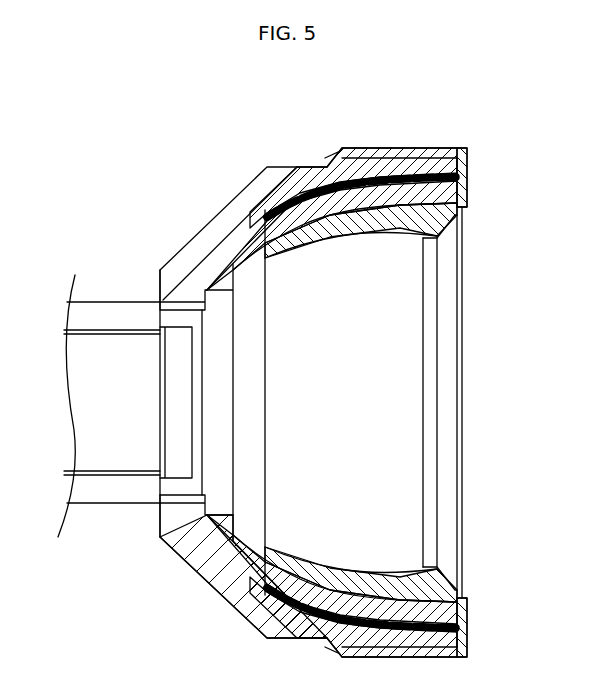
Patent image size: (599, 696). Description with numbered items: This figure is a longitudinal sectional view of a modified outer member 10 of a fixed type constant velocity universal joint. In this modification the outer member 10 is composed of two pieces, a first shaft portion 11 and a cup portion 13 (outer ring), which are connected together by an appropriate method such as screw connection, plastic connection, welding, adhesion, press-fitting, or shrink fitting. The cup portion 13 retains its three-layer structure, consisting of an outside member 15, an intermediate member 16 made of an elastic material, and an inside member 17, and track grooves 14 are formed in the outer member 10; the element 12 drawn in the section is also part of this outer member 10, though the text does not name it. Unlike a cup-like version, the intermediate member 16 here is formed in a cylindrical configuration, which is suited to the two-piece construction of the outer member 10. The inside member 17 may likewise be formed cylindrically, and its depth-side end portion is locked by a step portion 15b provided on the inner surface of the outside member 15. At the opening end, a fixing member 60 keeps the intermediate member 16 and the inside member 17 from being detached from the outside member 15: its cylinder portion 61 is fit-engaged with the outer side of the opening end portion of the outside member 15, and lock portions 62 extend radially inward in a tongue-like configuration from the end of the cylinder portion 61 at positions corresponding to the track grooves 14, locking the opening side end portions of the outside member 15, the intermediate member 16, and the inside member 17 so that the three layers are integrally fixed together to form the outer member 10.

The outer member 10 is at (183, 169).
The first shaft portion 11 is at (98, 493).
The holder body 12 is at (460, 236).
The cup portion 13 is at (238, 378).
The track grooves 14 is at (460, 222).
The outside member 15 is at (332, 361).
The step portion 15b is at (265, 232).
The intermediate member 16 is at (343, 180).
The inside member 17 is at (293, 213).
The fixing member 60 is at (387, 368).
The cylinder portion 61 is at (430, 150).
The lock portions 62 is at (467, 175).